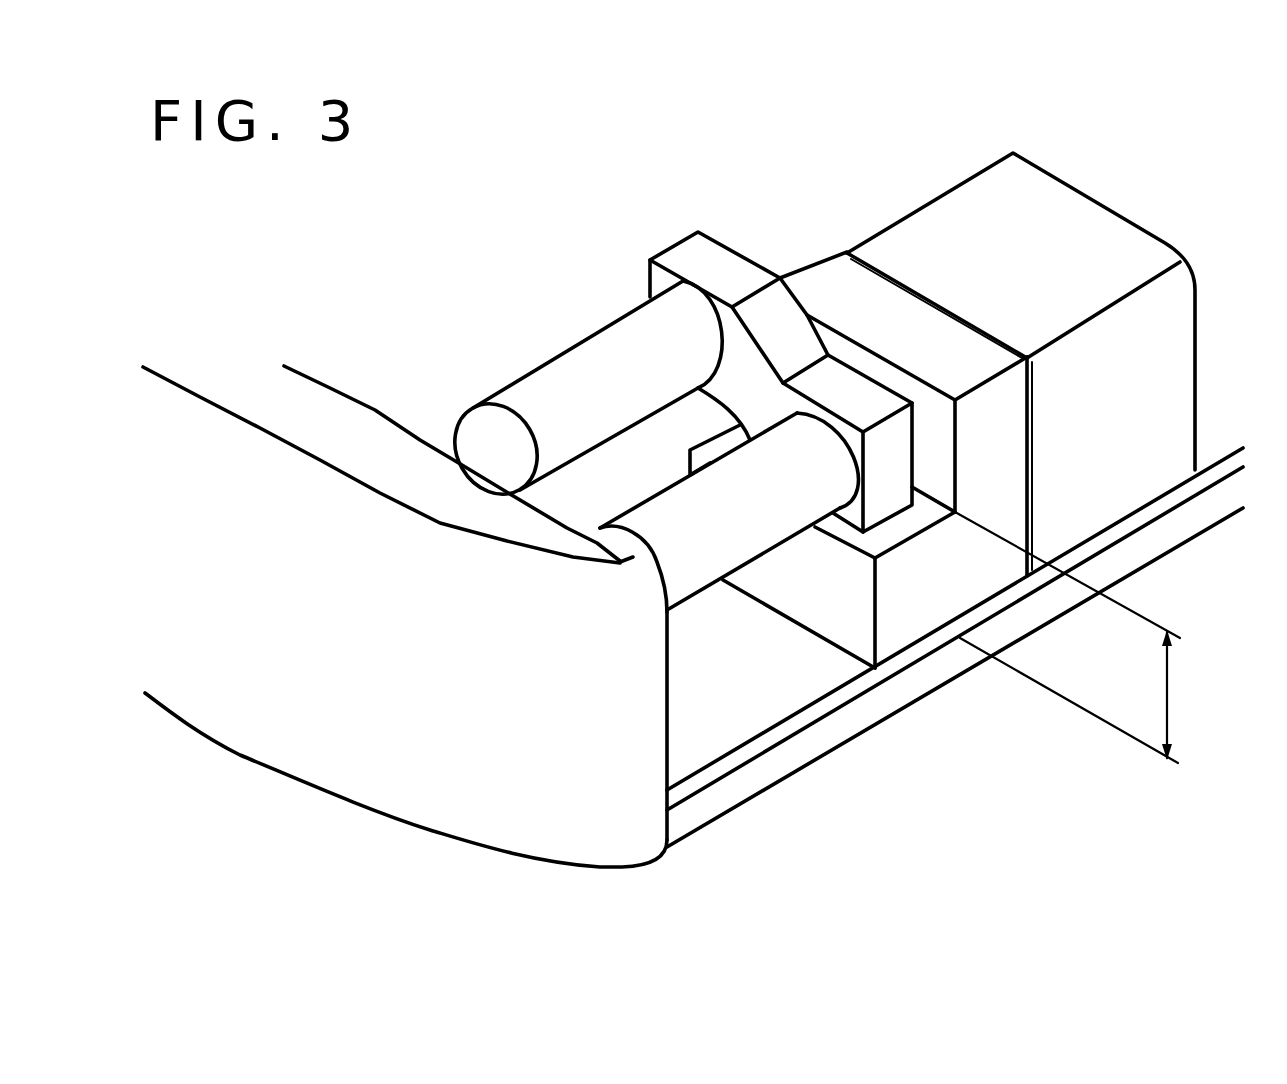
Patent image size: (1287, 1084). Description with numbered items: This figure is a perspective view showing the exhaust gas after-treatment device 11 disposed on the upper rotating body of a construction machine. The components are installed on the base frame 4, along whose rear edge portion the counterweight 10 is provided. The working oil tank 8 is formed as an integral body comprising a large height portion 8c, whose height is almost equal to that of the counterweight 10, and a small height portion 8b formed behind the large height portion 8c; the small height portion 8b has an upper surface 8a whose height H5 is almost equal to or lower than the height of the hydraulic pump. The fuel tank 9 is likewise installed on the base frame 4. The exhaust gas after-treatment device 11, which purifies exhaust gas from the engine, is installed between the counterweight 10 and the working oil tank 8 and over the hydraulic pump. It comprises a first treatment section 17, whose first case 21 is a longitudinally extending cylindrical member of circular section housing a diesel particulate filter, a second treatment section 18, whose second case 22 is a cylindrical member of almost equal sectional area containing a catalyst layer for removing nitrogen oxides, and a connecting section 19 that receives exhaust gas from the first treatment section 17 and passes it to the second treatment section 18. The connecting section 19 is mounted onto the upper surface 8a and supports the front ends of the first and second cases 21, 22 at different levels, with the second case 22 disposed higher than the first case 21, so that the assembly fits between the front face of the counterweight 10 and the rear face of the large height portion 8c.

The base frame 4 is at (1200, 533).
The working oil tank 8 is at (875, 469).
The upper surface 8a is at (852, 545).
The small height portion 8b is at (917, 622).
The large height portion 8c is at (832, 278).
The fuel tank 9 is at (1085, 208).
The counterweight 10 is at (340, 767).
The exhaust gas after-treatment device 11 is at (558, 220).
The first treatment section 17 is at (699, 548).
The second treatment section 18 is at (594, 389).
The connecting section 19 is at (685, 250).
The first case 21 is at (680, 560).
The second case 22 is at (557, 368).
The height of the upper surface H5 is at (1070, 637).